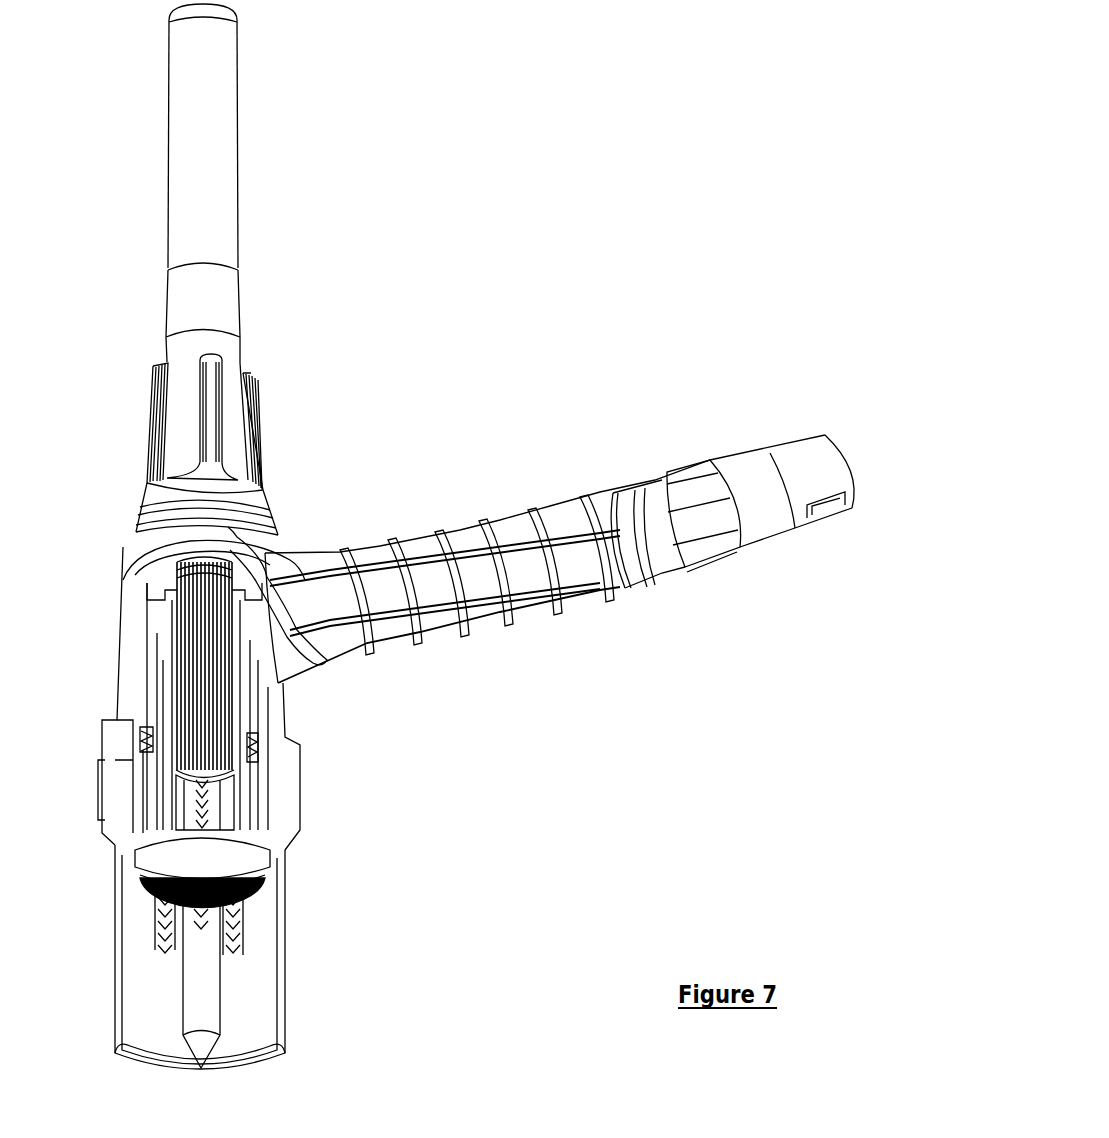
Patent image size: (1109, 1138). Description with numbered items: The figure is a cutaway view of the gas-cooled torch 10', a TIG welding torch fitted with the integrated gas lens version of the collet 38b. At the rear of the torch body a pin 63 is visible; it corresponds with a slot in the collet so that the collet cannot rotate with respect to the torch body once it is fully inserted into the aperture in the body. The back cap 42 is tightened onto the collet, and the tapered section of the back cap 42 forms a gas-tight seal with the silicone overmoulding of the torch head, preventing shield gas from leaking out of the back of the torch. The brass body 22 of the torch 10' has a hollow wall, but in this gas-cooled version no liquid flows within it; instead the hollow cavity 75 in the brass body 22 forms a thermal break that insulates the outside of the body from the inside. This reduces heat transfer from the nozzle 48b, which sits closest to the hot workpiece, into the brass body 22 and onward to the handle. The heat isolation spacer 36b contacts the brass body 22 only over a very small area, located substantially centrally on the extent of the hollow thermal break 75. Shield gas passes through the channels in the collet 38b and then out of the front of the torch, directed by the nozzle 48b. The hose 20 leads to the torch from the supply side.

The gas-cooled torch 10' is at (473, 534).
The back cap 42 is at (214, 187).
The hose 20 is at (828, 455).
The pin 63 is at (160, 600).
The brass body 22 is at (162, 627).
The hollow cavity 75 is at (165, 697).
The heat isolation spacer 36b is at (270, 757).
The collet 38b is at (220, 826).
The nozzle 48b is at (284, 990).